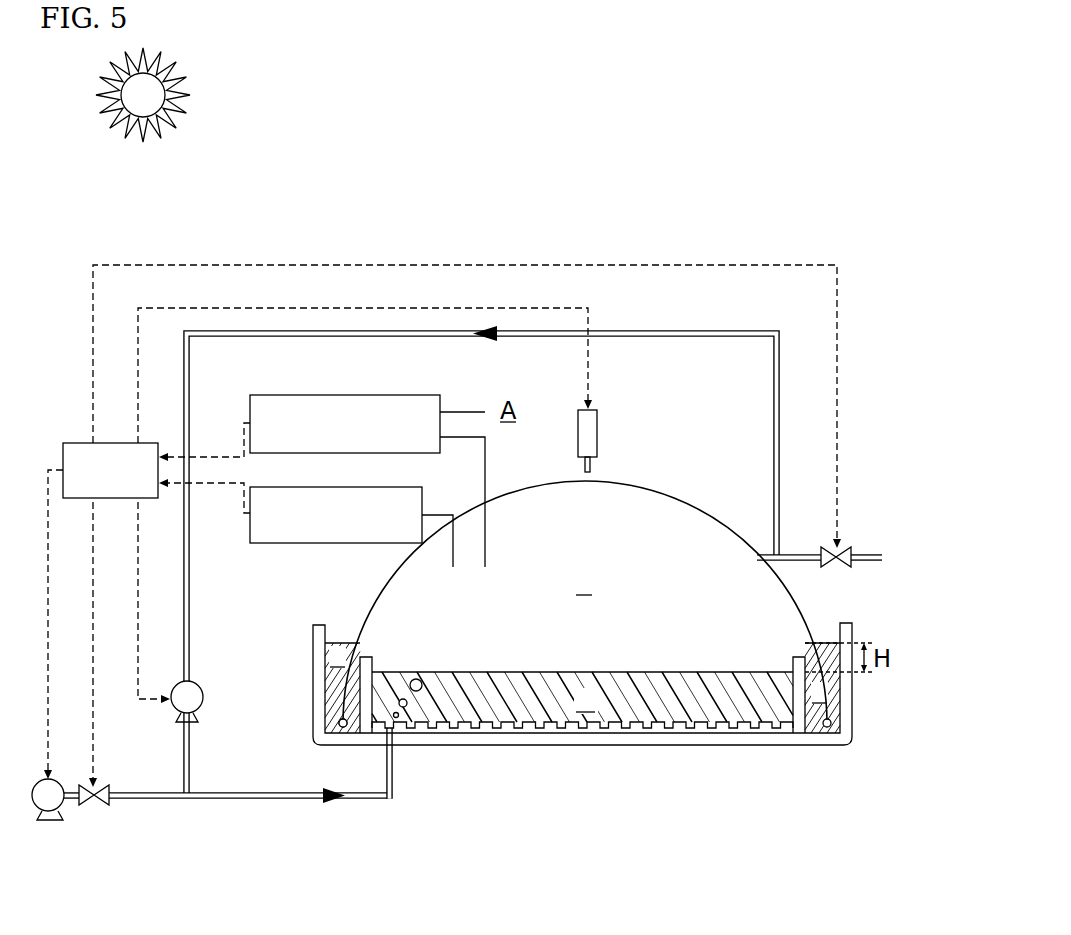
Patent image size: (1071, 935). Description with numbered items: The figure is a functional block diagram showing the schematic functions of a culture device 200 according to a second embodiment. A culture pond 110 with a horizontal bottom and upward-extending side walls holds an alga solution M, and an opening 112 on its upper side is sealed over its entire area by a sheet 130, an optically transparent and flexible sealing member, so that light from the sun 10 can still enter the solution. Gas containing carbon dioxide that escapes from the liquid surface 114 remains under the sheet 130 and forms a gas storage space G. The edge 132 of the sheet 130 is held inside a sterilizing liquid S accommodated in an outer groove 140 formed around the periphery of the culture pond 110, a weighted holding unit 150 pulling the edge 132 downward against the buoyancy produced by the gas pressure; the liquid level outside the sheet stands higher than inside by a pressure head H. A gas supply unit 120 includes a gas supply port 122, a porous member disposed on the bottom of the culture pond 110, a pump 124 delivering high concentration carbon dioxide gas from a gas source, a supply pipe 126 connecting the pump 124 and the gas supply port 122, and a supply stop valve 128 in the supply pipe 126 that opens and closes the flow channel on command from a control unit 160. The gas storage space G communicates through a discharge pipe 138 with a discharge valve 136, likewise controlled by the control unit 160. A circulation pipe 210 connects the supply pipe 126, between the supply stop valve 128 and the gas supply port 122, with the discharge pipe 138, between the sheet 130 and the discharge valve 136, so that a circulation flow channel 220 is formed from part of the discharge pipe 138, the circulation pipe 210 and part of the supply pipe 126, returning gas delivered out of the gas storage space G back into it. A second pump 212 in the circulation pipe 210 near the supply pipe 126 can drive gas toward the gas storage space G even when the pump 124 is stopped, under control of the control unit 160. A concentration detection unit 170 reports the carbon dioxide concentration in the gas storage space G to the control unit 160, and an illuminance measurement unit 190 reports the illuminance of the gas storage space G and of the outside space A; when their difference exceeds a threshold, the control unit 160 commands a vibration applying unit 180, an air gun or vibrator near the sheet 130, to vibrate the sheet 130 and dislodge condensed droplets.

The sun 10 is at (188, 78).
The culture device 200 is at (760, 187).
The culture pond 110 is at (512, 745).
The opening 112 is at (407, 660).
The liquid surface 114 is at (690, 672).
The gas supply unit 120 is at (240, 814).
The gas supply port 122 is at (411, 733).
The pump 124 is at (52, 821).
The supply pipe 126 is at (178, 800).
The supply stop valve 128 is at (100, 806).
The sheet 130 is at (650, 492).
The edge 132 is at (338, 720).
The discharge valve 136 is at (842, 548).
The discharge pipe 138 is at (795, 553).
The outer groove 140 is at (313, 640).
The holding unit 150 is at (343, 728).
The control unit 160 is at (148, 443).
The concentration detection unit 170 is at (415, 487).
The vibration applying unit 180 is at (597, 428).
The illuminance measurement unit 190 is at (428, 384).
The circulation pipe 210 is at (256, 333).
The second pump 212 is at (204, 692).
The circulation flow channel 220 is at (652, 316).